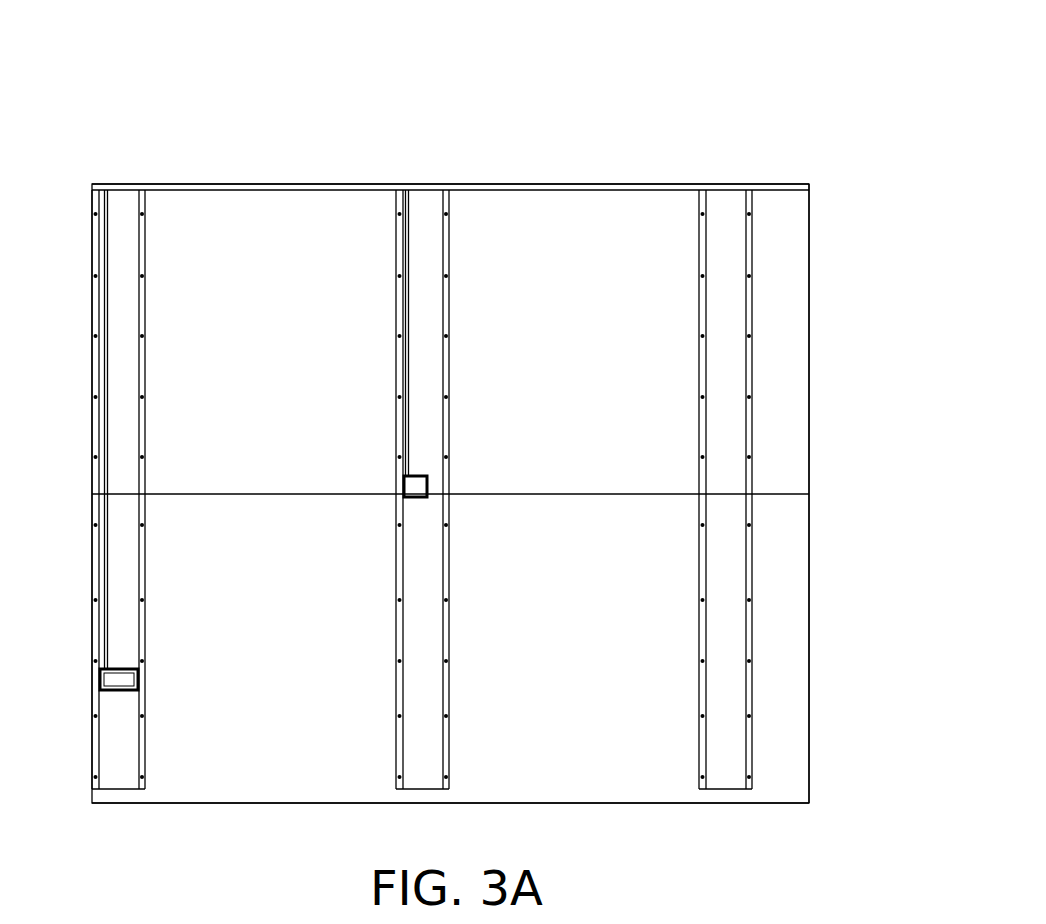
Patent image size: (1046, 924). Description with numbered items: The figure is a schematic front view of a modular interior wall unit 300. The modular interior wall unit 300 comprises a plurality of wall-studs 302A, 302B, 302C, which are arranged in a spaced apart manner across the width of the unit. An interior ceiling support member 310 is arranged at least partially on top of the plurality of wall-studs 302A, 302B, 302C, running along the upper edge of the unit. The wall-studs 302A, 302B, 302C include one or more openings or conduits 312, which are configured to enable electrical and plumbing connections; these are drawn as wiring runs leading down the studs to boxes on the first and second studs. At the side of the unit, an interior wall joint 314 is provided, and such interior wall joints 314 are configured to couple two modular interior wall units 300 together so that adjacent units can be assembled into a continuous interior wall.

The modular interior wall unit 300 is at (790, 63).
The wall-stud 302A is at (108, 458).
The wall-stud 302B is at (414, 458).
The wall-stud 302C is at (719, 458).
The interior ceiling support member 310 is at (450, 157).
The openings or conduits 312 is at (227, 417).
The interior wall joints 314 is at (494, 493).